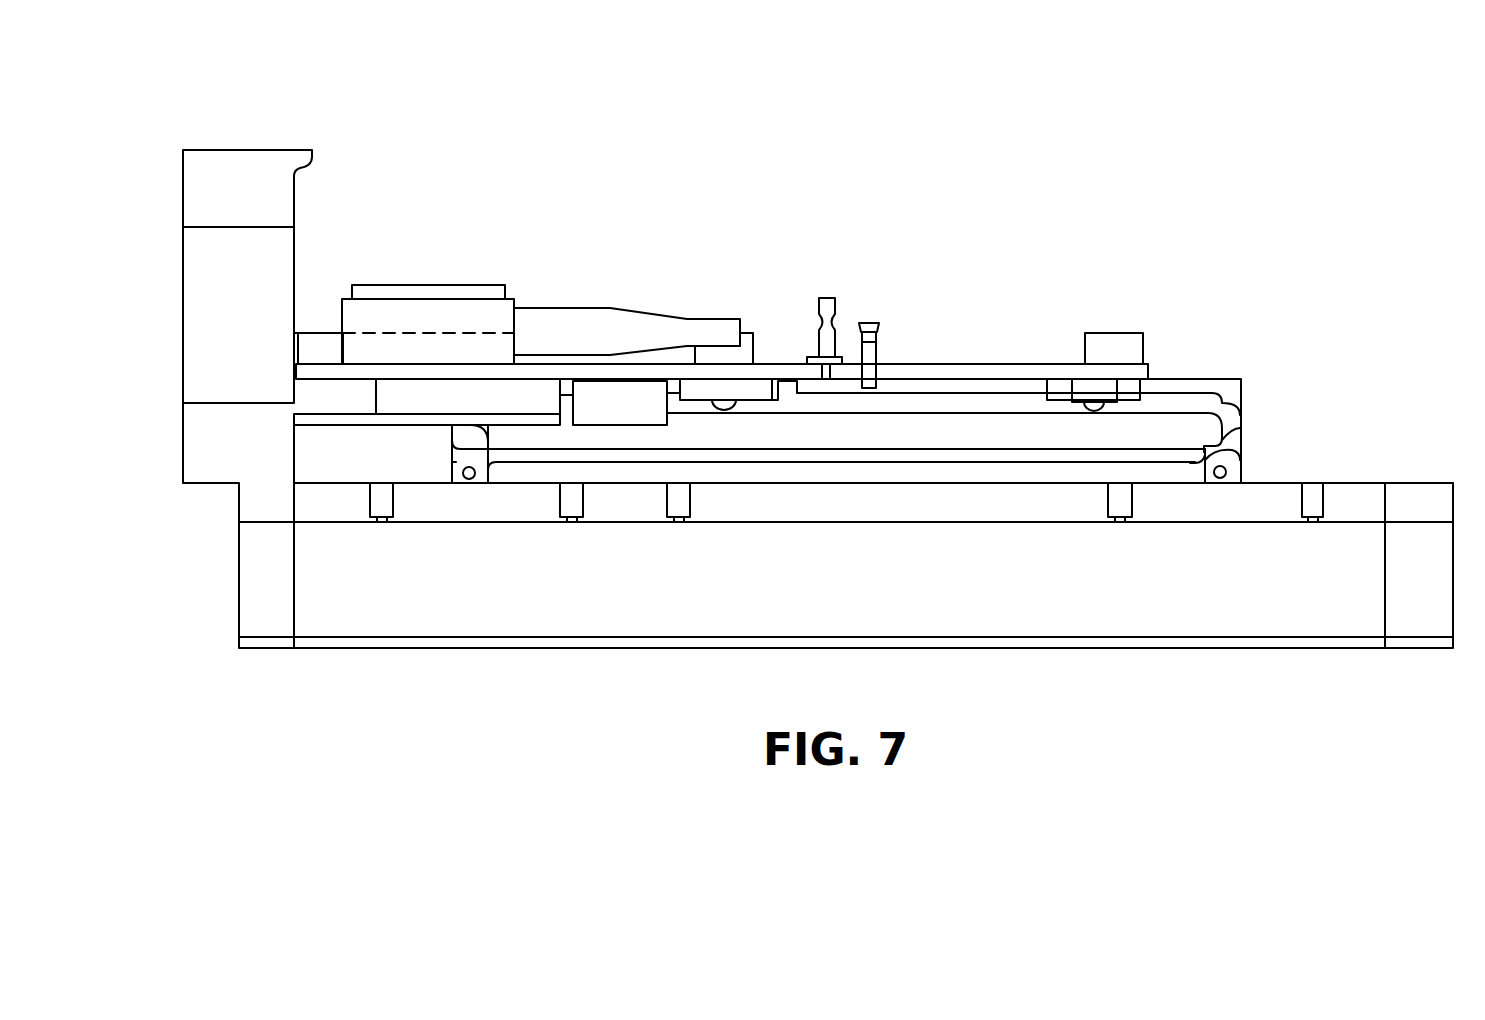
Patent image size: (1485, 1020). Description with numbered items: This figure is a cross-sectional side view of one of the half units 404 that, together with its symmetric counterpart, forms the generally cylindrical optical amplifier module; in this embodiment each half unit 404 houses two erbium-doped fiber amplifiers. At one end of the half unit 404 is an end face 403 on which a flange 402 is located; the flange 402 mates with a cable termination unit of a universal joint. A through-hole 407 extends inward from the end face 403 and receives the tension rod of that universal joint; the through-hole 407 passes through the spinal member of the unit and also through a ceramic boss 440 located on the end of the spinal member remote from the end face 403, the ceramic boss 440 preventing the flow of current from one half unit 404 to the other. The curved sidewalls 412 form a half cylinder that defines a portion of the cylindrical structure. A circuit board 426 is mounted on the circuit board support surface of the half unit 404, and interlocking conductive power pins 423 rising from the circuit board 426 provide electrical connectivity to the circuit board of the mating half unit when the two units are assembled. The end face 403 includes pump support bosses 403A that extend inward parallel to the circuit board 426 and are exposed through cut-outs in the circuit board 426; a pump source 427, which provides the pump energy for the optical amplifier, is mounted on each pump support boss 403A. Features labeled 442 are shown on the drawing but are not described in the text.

The flange 402 is at (196, 343).
The end face 403 is at (242, 162).
The pump support boss 403A is at (347, 402).
The half unit 404 is at (672, 648).
The through-hole 407 is at (449, 622).
The curved sidewall 412 is at (1273, 493).
The interlocking conductive power pin 423 is at (866, 323).
The circuit board 426 is at (965, 372).
The pump source 427 is at (427, 310).
The ceramic boss 440 is at (1423, 618).
The clamps 442 is at (745, 333).